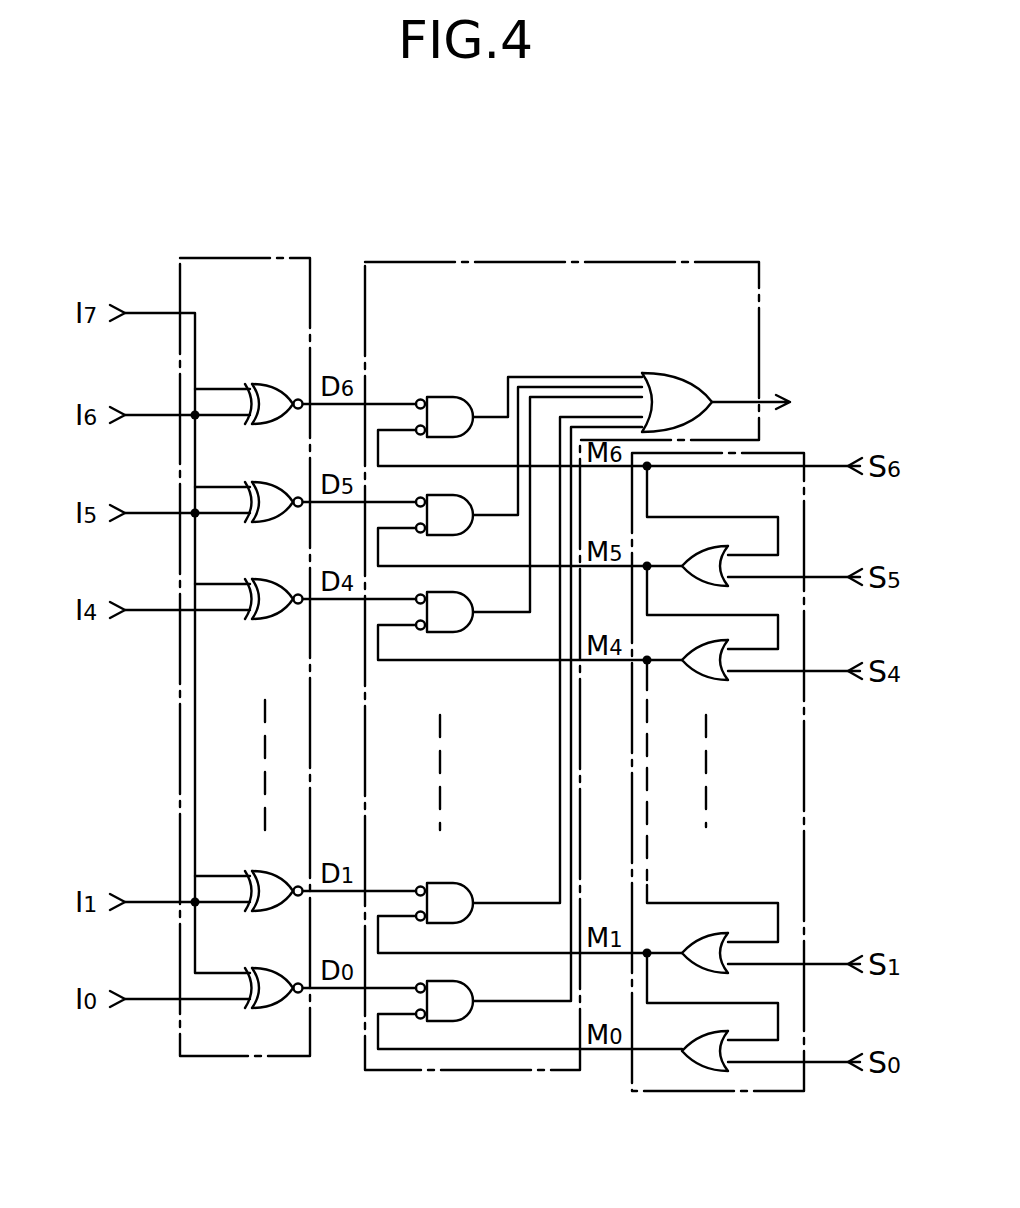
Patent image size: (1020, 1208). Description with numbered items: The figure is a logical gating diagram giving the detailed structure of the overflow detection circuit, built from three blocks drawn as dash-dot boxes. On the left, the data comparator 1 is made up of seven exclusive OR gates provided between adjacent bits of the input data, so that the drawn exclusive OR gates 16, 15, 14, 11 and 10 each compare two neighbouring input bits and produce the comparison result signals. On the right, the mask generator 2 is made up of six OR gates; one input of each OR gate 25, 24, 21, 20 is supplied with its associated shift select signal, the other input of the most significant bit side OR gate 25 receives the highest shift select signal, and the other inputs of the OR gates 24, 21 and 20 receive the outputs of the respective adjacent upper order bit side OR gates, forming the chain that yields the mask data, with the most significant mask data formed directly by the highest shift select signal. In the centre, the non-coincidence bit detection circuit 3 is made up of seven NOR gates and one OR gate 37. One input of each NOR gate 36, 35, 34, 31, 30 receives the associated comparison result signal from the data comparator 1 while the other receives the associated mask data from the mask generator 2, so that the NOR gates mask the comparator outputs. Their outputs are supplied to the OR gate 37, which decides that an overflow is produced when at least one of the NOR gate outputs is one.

The data comparator 1 is at (263, 258).
The mask generator 2 is at (745, 1092).
The non-coincidence bit detection circuit 3 is at (578, 261).
The exclusive OR gate 10 is at (274, 968).
The exclusive OR gate 11 is at (276, 871).
The exclusive OR gate 14 is at (275, 579).
The exclusive OR gate 15 is at (274, 482).
The exclusive OR gate 16 is at (276, 384).
The OR gate 20 is at (700, 1035).
The OR gate 21 is at (700, 937).
The OR gate 24 is at (700, 645).
The OR gate 25 is at (700, 547).
The NOR gate 30 is at (476, 990).
The NOR gate 31 is at (458, 883).
The NOR gate 34 is at (462, 592).
The NOR gate 35 is at (458, 495).
The NOR gate 36 is at (450, 397).
The OR gate 37 is at (664, 372).